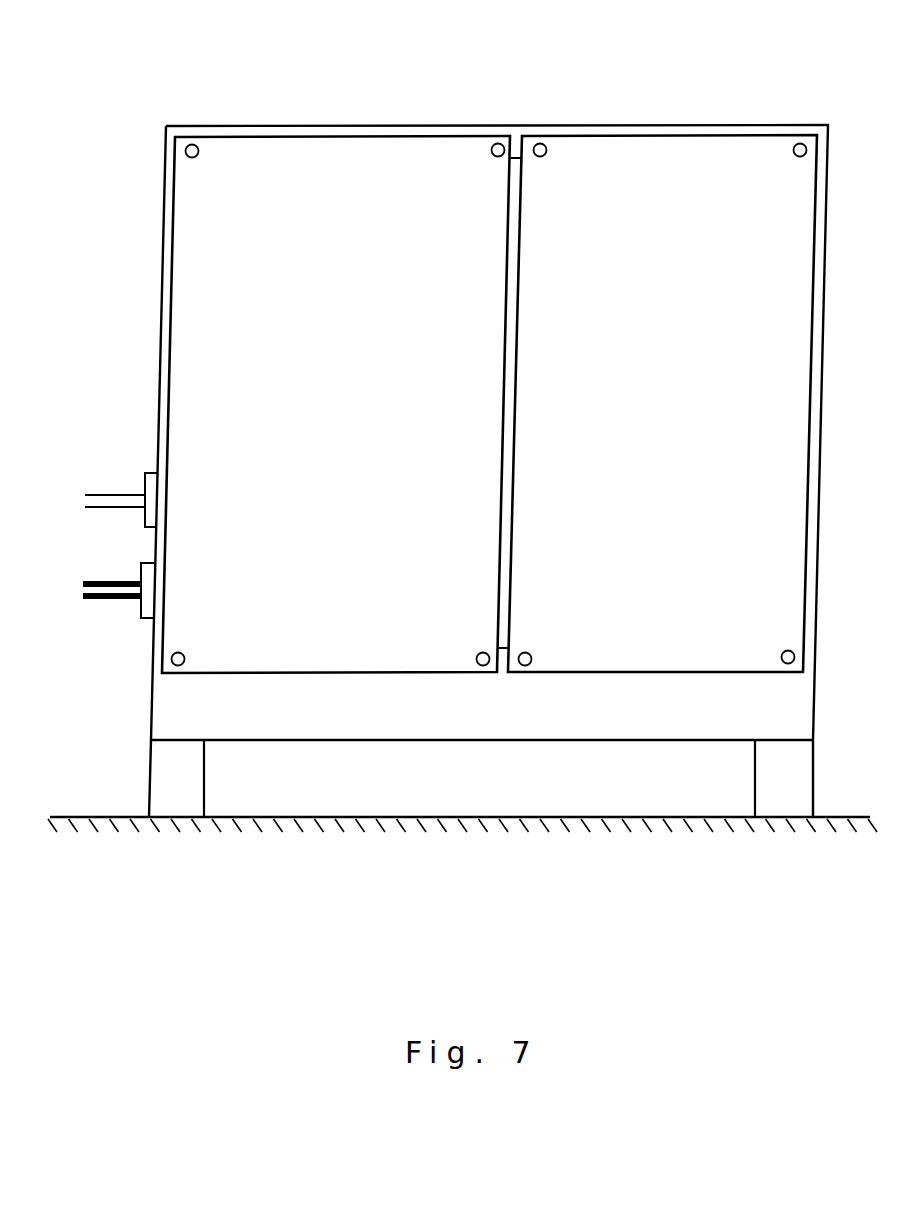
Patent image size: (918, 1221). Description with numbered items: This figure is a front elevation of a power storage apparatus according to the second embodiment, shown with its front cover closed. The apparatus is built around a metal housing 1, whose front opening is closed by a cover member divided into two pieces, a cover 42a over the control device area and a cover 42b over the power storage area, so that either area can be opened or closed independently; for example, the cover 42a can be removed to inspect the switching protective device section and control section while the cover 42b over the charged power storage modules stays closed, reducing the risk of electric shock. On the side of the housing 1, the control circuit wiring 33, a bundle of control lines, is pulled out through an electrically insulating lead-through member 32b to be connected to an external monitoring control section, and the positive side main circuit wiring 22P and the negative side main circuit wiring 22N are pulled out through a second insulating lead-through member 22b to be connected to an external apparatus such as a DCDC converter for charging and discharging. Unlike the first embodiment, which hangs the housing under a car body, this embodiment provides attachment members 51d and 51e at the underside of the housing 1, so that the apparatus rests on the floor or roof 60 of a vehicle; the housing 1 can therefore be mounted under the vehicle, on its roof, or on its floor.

The housing 1 is at (413, 125).
The cover 42a is at (303, 673).
The cover 42b is at (658, 672).
The lead-through member 32b is at (155, 472).
The control circuit wiring 33 is at (108, 494).
The lead-through member 22b is at (150, 563).
The positive side main circuit wiring 22P is at (108, 578).
The negative side main circuit wiring 22N is at (83, 596).
The attachment member 51d is at (151, 762).
The attachment member 51e is at (813, 767).
The roof 60 is at (458, 818).